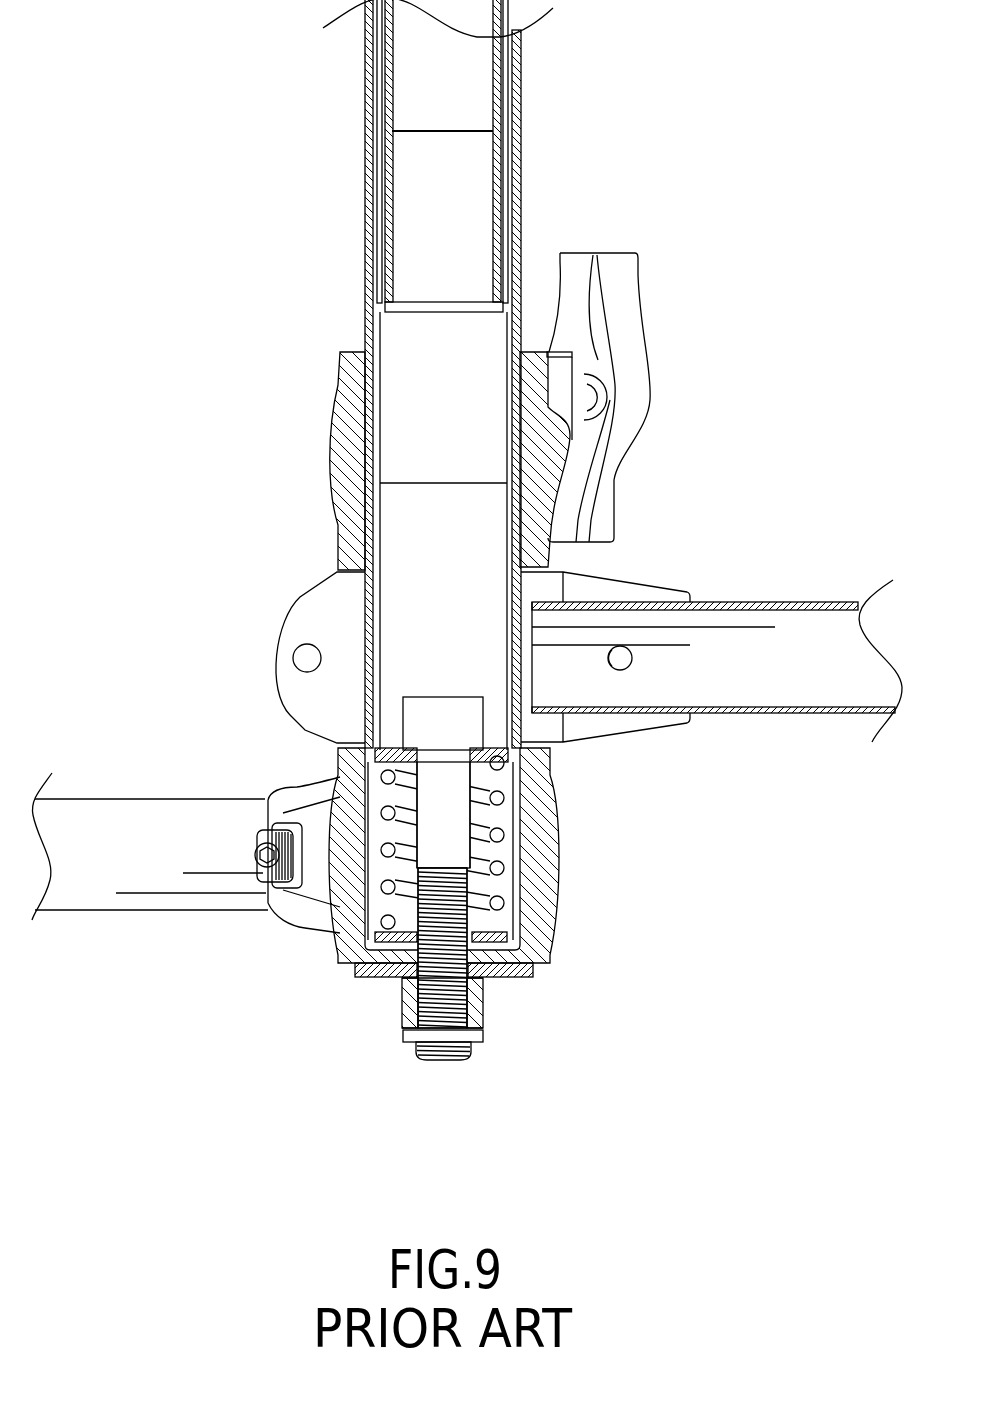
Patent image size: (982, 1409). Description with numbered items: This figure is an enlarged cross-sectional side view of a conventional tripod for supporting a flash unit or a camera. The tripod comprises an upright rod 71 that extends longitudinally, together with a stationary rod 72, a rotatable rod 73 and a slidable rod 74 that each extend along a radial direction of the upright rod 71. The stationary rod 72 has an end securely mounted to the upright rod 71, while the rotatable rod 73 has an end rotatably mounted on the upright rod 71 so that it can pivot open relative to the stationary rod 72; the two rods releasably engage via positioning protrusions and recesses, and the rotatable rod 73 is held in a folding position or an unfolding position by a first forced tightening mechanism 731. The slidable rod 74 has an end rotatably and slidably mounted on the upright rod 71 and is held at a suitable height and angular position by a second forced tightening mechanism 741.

The upright rod 71 is at (367, 152).
The stationary rod 72 is at (749, 622).
The rotatable rod 73 is at (148, 908).
The slidable rod 74 is at (338, 438).
The second forced tightening mechanism 741 is at (631, 377).
The first forced tightening mechanism 731 is at (374, 905).